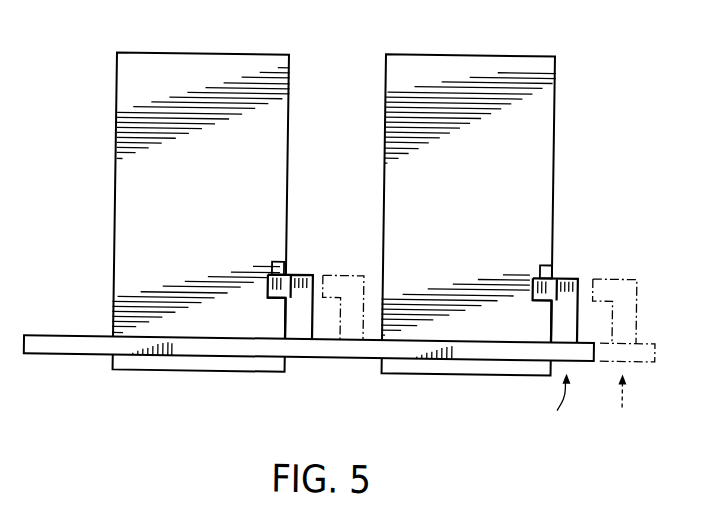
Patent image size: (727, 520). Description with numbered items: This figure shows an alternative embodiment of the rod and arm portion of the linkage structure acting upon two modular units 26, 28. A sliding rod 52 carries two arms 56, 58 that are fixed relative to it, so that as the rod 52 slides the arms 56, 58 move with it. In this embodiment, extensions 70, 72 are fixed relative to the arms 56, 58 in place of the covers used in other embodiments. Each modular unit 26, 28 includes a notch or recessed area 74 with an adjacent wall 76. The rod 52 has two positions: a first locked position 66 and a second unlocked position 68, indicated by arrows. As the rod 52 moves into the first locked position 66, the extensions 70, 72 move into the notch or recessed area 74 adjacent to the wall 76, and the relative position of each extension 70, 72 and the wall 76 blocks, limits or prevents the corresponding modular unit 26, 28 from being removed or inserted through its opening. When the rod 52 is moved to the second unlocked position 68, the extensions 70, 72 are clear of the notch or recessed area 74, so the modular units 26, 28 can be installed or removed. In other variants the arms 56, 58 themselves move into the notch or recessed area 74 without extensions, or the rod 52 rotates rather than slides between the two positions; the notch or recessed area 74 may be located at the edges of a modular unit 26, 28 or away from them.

The modular unit 26 is at (183, 152).
The modular unit 28 is at (458, 151).
The rod 52 is at (361, 357).
The arm 56 is at (287, 322).
The arm 58 is at (553, 330).
The first locked position 66 is at (575, 400).
The second unlocked position 68 is at (638, 400).
The extension 70 is at (295, 275).
The extension 72 is at (558, 275).
The notch or recessed area 74 is at (268, 302).
The wall 76 is at (272, 262).